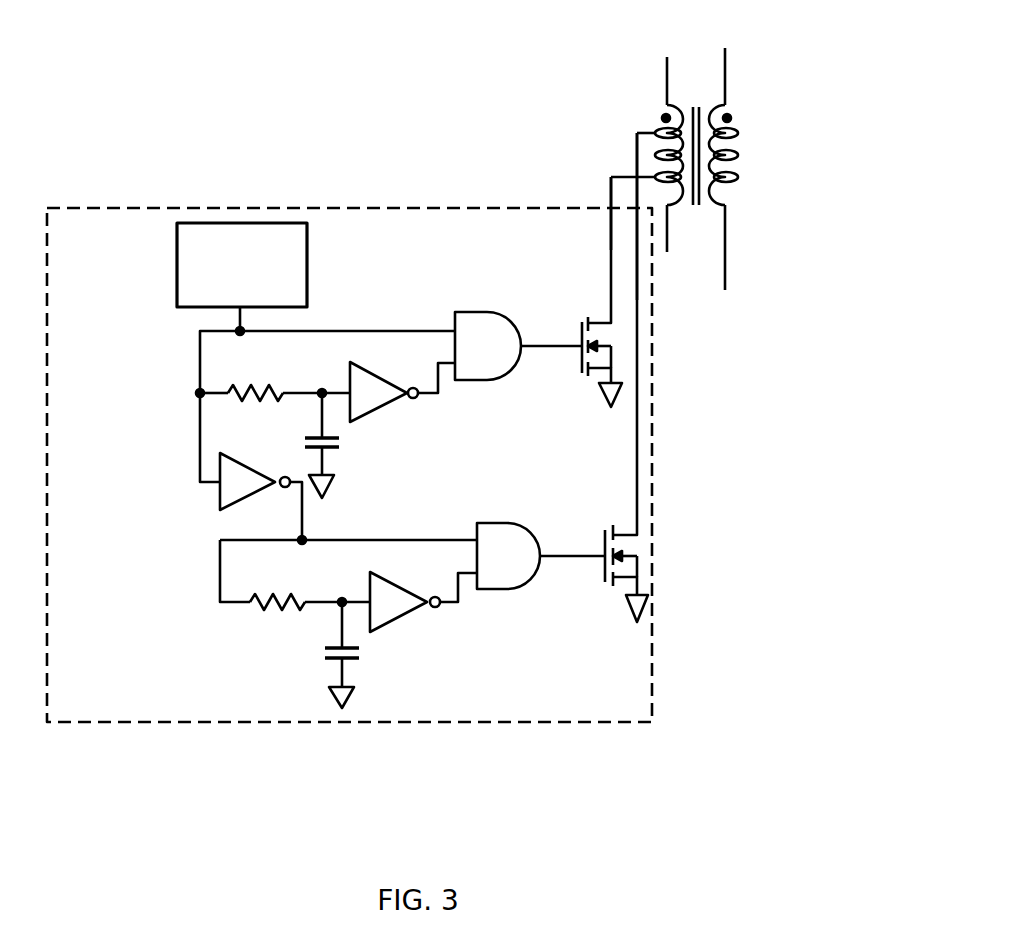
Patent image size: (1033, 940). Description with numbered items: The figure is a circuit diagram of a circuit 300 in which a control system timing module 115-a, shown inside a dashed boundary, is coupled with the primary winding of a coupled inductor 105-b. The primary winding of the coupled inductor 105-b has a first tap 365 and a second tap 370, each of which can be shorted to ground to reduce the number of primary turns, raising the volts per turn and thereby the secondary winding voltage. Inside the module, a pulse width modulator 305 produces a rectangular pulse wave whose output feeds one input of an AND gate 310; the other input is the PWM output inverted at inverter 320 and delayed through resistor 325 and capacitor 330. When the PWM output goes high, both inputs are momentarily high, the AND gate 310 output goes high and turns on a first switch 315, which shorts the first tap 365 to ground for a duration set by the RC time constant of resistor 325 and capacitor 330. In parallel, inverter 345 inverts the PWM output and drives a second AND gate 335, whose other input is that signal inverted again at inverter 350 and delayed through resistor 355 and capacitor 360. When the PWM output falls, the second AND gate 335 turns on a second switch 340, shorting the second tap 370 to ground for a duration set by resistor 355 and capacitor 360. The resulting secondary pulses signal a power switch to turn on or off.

The circuit 300 is at (746, 772).
The coupled inductor 105-b is at (668, 88).
The control system timing module 115-a is at (317, 208).
The pulse width modulator 305 is at (175, 277).
The AND gate 310 is at (482, 312).
The first switch 315 is at (582, 322).
The inverter 320 is at (350, 370).
The resistor 325 is at (263, 385).
The capacitor 330 is at (303, 445).
The second AND gate 335 is at (492, 523).
The second switch 340 is at (605, 532).
The inverter 345 is at (220, 502).
The inverter 350 is at (370, 593).
The resistor 355 is at (297, 597).
The capacitor 360 is at (323, 648).
The first tap 365 is at (632, 177).
The second tap 370 is at (653, 130).